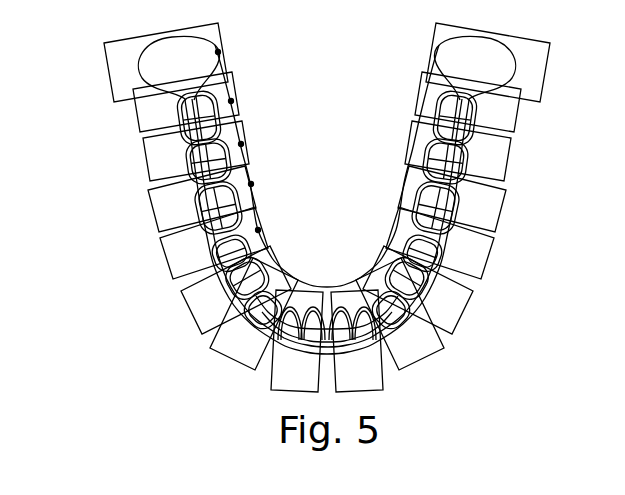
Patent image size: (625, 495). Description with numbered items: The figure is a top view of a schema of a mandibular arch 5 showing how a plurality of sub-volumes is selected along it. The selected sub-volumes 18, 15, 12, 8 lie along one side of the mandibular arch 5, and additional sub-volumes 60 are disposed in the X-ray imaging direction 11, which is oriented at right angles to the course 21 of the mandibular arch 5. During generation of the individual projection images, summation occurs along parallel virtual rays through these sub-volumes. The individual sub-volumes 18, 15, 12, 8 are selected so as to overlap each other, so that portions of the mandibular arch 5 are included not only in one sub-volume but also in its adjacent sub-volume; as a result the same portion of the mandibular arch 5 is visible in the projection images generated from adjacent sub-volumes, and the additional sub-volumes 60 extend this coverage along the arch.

The mandibular arch 5 is at (500, 66).
The selected sub-volume 8 is at (253, 184).
The X-ray imaging direction 11 is at (164, 199).
The selected sub-volume 12 is at (243, 144).
The selected sub-volume 15 is at (233, 101).
The selected sub-volume 18 is at (221, 53).
The course of the mandibular arch 21 is at (218, 50).
The additional sub-volumes 60 is at (432, 50).